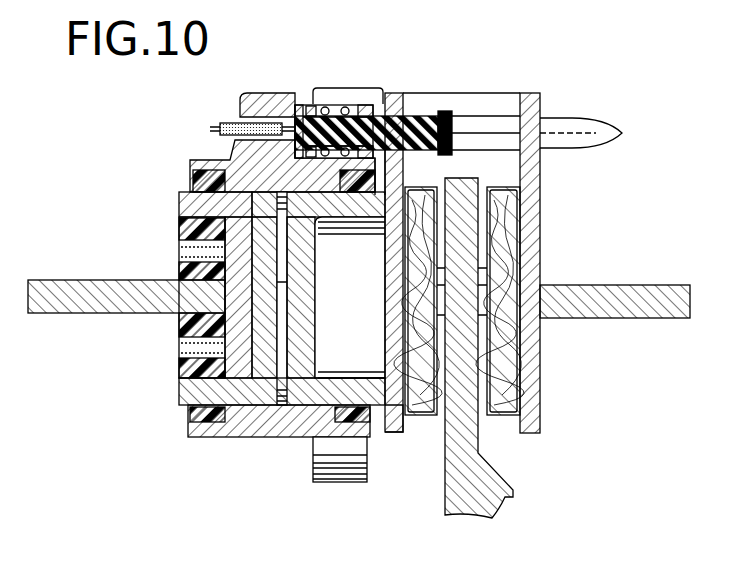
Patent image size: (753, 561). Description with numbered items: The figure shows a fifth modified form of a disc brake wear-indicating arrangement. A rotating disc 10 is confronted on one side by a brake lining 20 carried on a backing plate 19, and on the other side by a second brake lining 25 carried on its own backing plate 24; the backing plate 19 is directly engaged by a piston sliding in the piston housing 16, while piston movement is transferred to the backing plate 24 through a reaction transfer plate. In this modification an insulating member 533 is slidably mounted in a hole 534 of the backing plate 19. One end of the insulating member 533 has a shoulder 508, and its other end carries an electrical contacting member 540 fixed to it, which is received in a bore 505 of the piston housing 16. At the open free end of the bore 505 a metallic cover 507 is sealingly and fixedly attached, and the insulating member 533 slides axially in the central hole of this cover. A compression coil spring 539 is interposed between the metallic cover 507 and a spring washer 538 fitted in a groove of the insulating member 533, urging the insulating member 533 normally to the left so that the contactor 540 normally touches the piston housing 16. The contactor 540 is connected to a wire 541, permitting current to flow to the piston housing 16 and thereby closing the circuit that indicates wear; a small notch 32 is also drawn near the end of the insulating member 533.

The disc 10 is at (445, 182).
The piston housing 16 is at (240, 162).
The backing plate 19 is at (391, 433).
The brake lining 20 is at (425, 416).
The backing plate 24 is at (533, 392).
The brake lining 25 is at (500, 416).
The notch 32 is at (453, 152).
The bore 505 is at (306, 104).
The metallic cover 507 is at (376, 102).
The shoulder 508 is at (452, 112).
The insulating member 533 is at (428, 115).
The hole 534 is at (415, 115).
The spring washer 538 is at (328, 156).
The compression coil spring 539 is at (345, 107).
The electrical contacting member 540 is at (298, 107).
The wire 541 is at (232, 126).